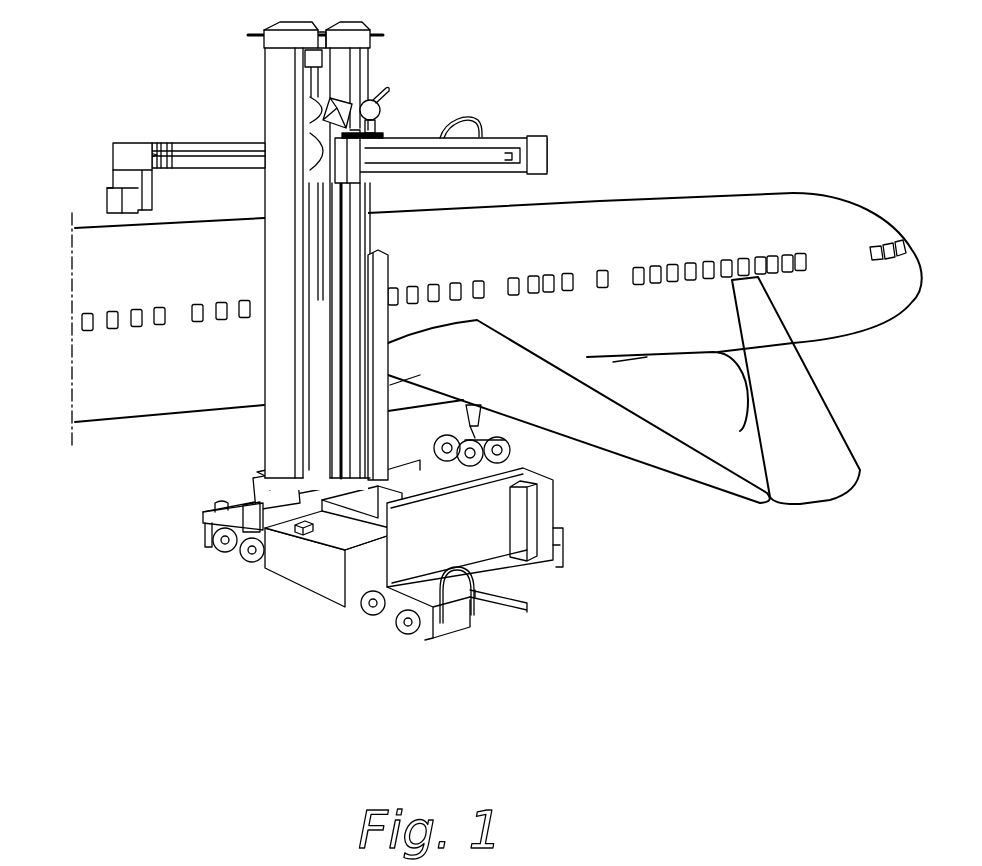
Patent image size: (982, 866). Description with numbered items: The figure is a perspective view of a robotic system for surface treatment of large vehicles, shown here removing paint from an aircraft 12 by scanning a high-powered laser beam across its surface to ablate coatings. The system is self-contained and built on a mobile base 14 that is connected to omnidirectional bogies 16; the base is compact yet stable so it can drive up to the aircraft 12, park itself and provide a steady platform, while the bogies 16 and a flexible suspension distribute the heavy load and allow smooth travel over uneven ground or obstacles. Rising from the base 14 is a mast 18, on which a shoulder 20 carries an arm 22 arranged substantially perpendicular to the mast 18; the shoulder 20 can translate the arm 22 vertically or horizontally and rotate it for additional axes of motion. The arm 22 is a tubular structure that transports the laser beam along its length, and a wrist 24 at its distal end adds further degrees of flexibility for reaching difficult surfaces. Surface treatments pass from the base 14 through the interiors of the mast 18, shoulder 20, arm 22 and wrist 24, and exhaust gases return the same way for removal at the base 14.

The aircraft 12 is at (844, 224).
The mobile base 14 is at (297, 595).
The omnidirectional bogies 16 is at (222, 565).
The mast 18 is at (280, 426).
The shoulder 20 is at (395, 101).
The arm 22 is at (215, 150).
The wrist 24 is at (90, 187).